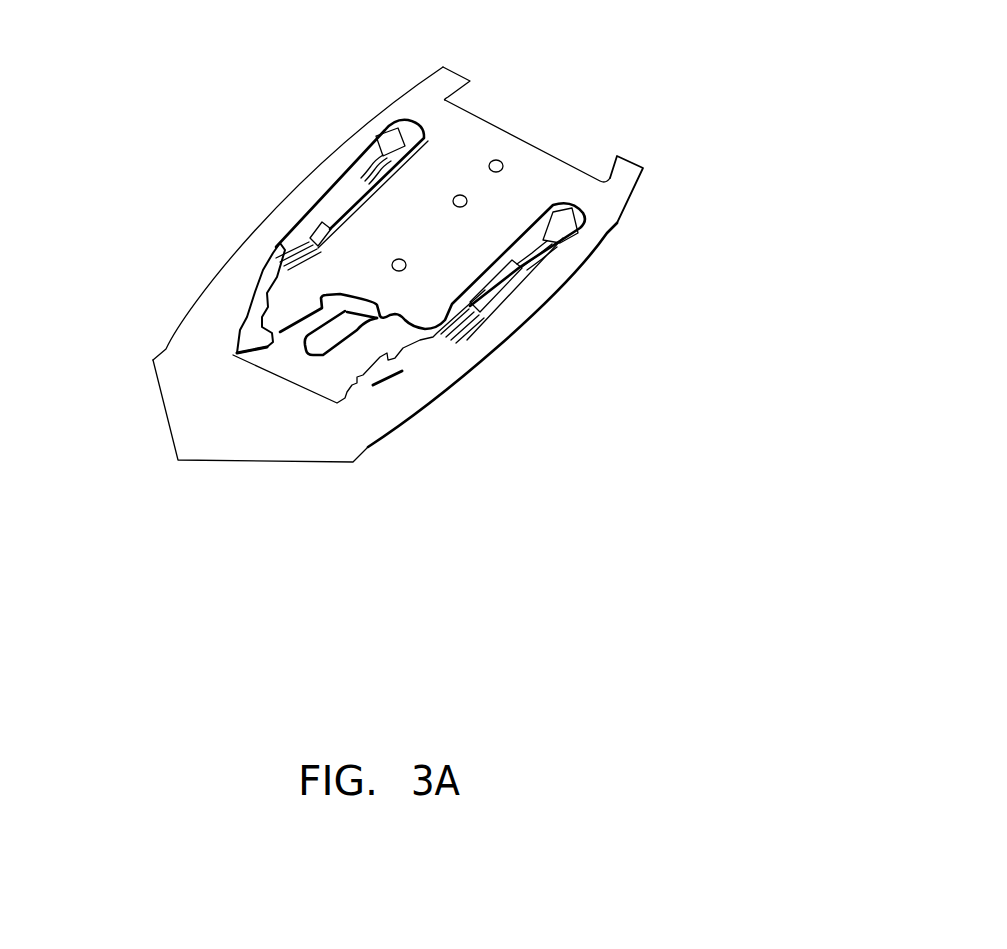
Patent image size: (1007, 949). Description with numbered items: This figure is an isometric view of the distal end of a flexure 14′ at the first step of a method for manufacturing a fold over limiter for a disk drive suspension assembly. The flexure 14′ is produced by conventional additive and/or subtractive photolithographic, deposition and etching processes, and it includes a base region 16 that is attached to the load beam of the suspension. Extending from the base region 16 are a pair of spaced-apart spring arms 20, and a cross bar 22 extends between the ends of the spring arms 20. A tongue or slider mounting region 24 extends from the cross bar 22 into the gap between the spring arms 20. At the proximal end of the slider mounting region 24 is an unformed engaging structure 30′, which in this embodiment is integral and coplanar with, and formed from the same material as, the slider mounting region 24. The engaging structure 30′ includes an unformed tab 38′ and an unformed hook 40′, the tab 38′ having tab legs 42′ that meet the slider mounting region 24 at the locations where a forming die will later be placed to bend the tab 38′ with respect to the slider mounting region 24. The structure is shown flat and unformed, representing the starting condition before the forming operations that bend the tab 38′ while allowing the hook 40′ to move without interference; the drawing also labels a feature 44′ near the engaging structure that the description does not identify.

The contact assembly 14′ is at (660, 198).
The housing body 16 is at (215, 428).
The side wall 20 is at (537, 293).
The first mounting tab 22 is at (457, 147).
The second mounting tab 24 is at (487, 210).
The platform 30′ is at (365, 337).
The central tab 38′ is at (358, 311).
The lobe 40′ is at (323, 343).
The contact slot 42′ is at (331, 291).
The latch member 44′ is at (268, 352).